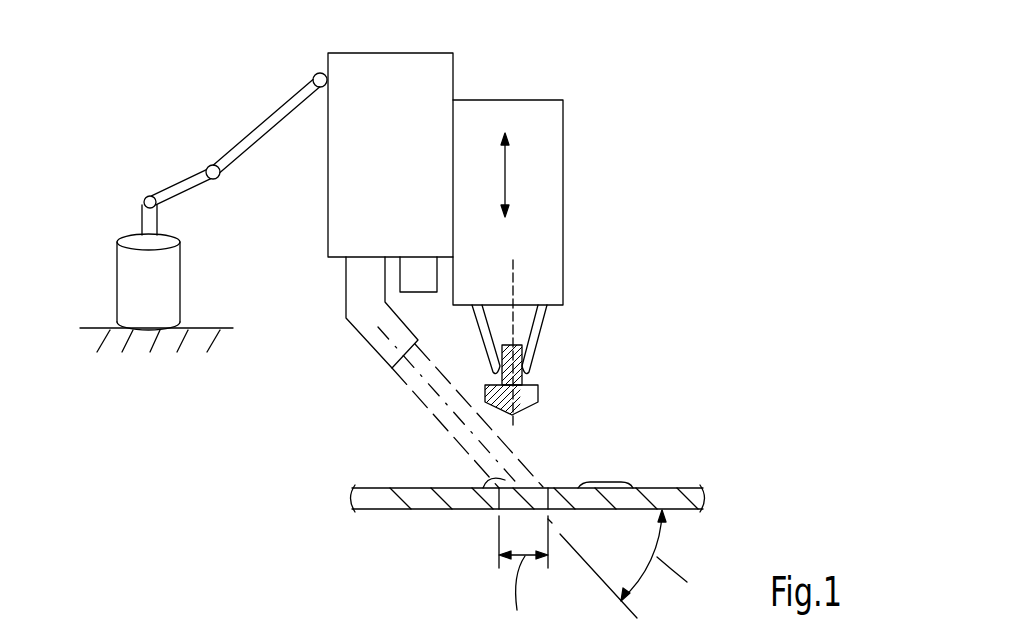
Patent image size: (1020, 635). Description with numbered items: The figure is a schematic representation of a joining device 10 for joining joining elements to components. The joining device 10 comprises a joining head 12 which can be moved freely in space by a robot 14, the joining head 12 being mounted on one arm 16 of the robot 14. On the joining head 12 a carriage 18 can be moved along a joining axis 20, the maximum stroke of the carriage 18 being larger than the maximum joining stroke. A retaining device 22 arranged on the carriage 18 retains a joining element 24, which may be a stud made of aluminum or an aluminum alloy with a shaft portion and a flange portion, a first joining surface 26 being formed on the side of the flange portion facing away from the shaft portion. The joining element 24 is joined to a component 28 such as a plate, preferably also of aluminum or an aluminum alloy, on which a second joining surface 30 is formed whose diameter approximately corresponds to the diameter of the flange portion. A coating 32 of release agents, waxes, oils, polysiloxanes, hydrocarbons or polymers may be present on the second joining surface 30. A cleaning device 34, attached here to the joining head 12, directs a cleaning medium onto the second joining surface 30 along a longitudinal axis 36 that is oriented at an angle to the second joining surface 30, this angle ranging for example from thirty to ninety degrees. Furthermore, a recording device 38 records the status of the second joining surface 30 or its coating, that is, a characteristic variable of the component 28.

The joining device 10 is at (700, 147).
The joining head 12 is at (422, 100).
The robot 14 is at (138, 285).
The arm 16 is at (263, 128).
The carriage 18 is at (542, 165).
The joining axis 20 is at (515, 273).
The retaining device 22 is at (541, 322).
The joining element 24 is at (540, 386).
The first joining surface 26 is at (527, 411).
The component 28 is at (668, 488).
The second joining surface 30 is at (487, 478).
The coating 32 is at (610, 480).
The cleaning device 34 is at (353, 352).
The longitudinal axis 36 is at (465, 425).
The recording device 38 is at (418, 268).